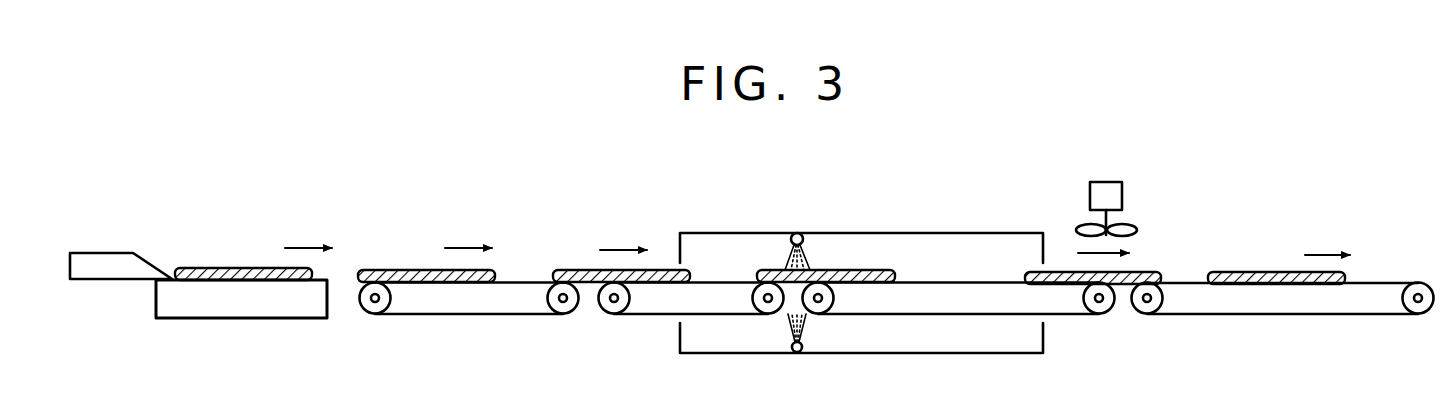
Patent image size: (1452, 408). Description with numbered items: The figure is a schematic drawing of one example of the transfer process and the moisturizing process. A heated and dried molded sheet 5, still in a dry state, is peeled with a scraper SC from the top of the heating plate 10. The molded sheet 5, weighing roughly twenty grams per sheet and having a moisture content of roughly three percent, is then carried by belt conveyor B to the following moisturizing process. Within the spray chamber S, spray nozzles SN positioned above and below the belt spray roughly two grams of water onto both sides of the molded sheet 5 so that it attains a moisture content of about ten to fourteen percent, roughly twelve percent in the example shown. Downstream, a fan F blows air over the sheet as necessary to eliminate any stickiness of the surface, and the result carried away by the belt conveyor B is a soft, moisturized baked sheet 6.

The scraper SC is at (100, 258).
The heating plate 10 is at (160, 306).
The molded sheet 5 is at (224, 267).
The belt conveyor B is at (528, 280).
The spray chamber S is at (937, 232).
The spray nozzles SN is at (797, 232).
The fan F is at (1127, 228).
The moisturized baked sheet 6 is at (1150, 272).